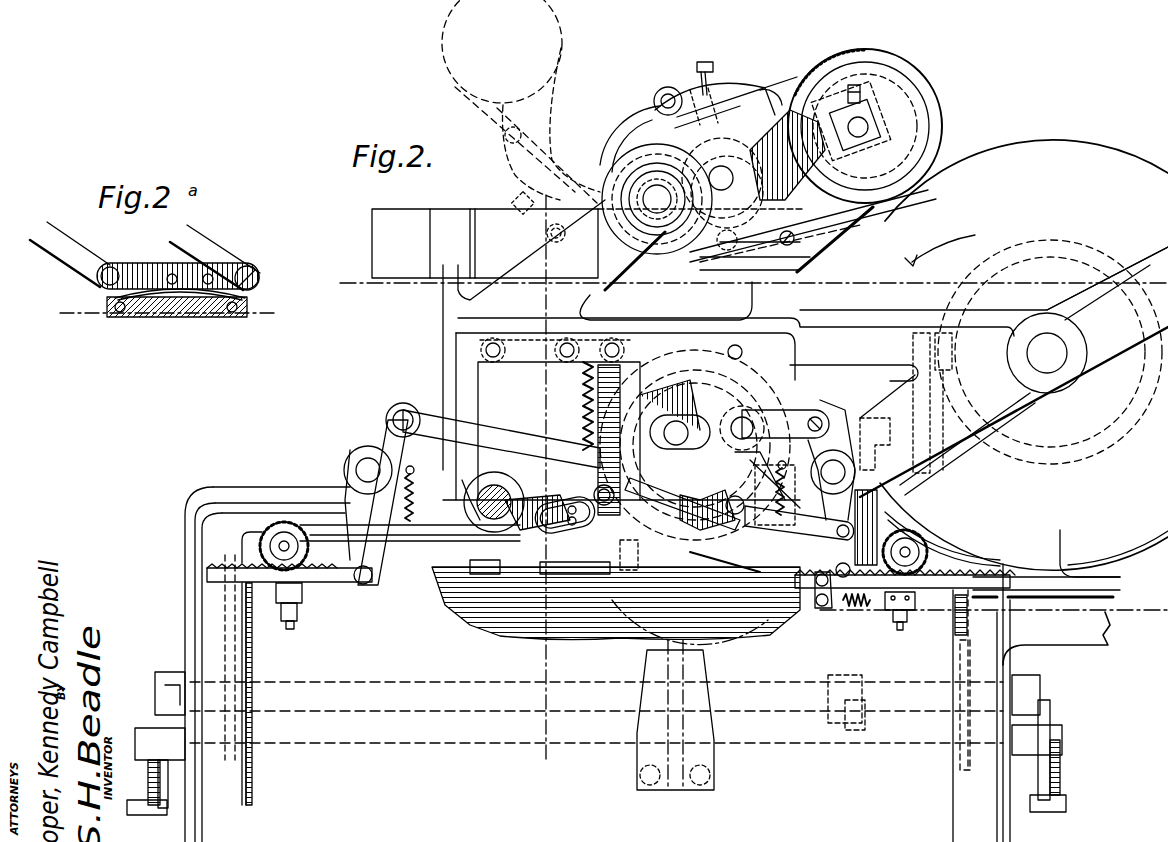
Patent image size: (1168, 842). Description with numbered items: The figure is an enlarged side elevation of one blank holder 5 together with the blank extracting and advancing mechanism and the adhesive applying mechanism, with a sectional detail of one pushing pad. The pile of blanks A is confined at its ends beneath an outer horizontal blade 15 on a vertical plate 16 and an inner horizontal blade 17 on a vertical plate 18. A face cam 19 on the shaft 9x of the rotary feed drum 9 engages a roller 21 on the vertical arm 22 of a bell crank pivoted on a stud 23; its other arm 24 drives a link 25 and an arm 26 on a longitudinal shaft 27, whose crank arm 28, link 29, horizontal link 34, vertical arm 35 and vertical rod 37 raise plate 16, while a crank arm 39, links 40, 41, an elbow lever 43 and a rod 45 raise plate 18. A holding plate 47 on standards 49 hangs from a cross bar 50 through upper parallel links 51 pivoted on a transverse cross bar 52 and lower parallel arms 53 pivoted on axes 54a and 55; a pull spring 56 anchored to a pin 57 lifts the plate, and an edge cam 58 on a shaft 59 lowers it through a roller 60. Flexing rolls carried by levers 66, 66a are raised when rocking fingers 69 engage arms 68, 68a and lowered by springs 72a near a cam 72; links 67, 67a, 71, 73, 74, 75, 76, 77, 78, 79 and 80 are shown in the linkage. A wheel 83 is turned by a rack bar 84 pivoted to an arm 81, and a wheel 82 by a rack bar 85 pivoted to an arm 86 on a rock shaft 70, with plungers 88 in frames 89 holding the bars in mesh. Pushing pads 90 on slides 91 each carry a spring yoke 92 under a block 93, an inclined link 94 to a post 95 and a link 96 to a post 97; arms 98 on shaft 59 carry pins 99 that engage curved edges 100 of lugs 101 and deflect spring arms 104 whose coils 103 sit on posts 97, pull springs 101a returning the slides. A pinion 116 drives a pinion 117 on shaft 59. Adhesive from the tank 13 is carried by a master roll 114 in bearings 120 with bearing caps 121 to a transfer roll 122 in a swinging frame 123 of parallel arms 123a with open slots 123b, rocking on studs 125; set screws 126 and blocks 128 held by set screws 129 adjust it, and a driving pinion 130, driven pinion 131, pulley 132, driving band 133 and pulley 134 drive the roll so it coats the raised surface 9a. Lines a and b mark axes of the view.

In FIG. 2, the blank holder 5 is at (373, 770).
In FIG. 2, the rotary feed drum 9 is at (1082, 157).
In FIG. 2, the raised surface 9a is at (965, 550).
In FIG. 2, the shaft 9x is at (1047, 353).
In FIG. 2, the adhesive tank 13 is at (588, 243).
In FIG. 2, the outer horizontal blade 15 is at (245, 556).
In FIG. 2, the vertical plate 16 is at (236, 600).
In FIG. 2, the inner horizontal blade 17 is at (955, 560).
In FIG. 2, the vertical plate 18 is at (955, 622).
In FIG. 2, the face cam 19 is at (1000, 258).
In FIG. 2, the roller 21 is at (952, 358).
In FIG. 2, the vertical arm 22 is at (910, 375).
In FIG. 2, the stud 23 is at (947, 462).
In FIG. 2, the arm 24 is at (880, 440).
In FIG. 2, the link 25 is at (870, 530).
In FIG. 2, the arm 26 is at (848, 730).
In FIG. 2, the shaft 27 is at (315, 686).
In FIG. 2, the crank arm 28 is at (158, 717).
In FIG. 2, the link 29 is at (160, 775).
In FIG. 2, the horizontal link 34 is at (130, 805).
In FIG. 2, the vertical arm 35 is at (152, 798).
In FIG. 2, the vertical rod 37 is at (240, 668).
In FIG. 2, the crank arm 39 is at (1033, 720).
In FIG. 2, the link 40 is at (1038, 786).
In FIG. 2, the link 41 is at (1062, 802).
In FIG. 2, the elbow lever 43 is at (1052, 778).
In FIG. 2, the rod 45 is at (970, 690).
In FIG. 2, the horizontal plate 47 is at (537, 580).
In FIG. 2, the standards 49 is at (610, 390).
In FIG. 2, the horizontal cross bar 50 is at (618, 352).
In FIG. 2, the upper parallel links 51 is at (512, 332).
In FIG. 2, the transverse cross bar 52 is at (493, 358).
In FIG. 2, the lower parallel arms 53 is at (538, 490).
In FIG. 2, the axis 54a is at (604, 510).
In FIG. 2, the axis 55 is at (494, 485).
In FIG. 2, the pull spring 56 is at (580, 395).
In FIG. 2, the pin 57 is at (557, 347).
In FIG. 2, the edge cam 58 is at (690, 478).
In FIG. 2, the transverse rotary shaft 59 is at (665, 435).
In FIG. 2, the roller 60 is at (708, 478).
In FIG. 2, the lever 66 is at (330, 532).
In FIG. 2, the lever 66a is at (848, 559).
In FIG. 2, the lever 67 is at (380, 560).
In FIG. 2, the pin 67a is at (801, 552).
In FIG. 2, the arm 68 is at (445, 487).
In FIG. 2, the arm 68a is at (765, 495).
In FIG. 2, the rocking fingers 69 is at (783, 462).
In FIG. 2, the rock shaft 70 is at (362, 458).
In FIG. 2, the pivot 71 is at (830, 462).
In FIG. 2, the cam 72 is at (767, 477).
In FIG. 2, the spring 72a is at (609, 494).
In FIG. 2, the pivot 73 is at (746, 417).
In FIG. 2, the link 74 is at (780, 410).
In FIG. 2, the disc 75 is at (662, 418).
In FIG. 2, the lever 76 is at (836, 425).
In FIG. 2, the pivot 77 is at (836, 501).
In FIG. 2, the bar 78 is at (485, 432).
In FIG. 2, the pivot 79 is at (388, 425).
In FIG. 2, the spring 80 is at (848, 608).
In FIG. 2, the arm 81 is at (814, 596).
In FIG. 2, the wheel 82 is at (290, 524).
In FIG. 2, the wheel 83 is at (925, 540).
In FIG. 2, the rack bar 84 is at (937, 582).
In FIG. 2, the rack bar 85 is at (332, 578).
In FIG. 2, the arm 86 is at (372, 578).
In FIG. 2, the vertical plungers 88 is at (280, 595).
In FIG. 2, the frames 89 is at (302, 607).
In FIG. 2A, the pushing pads 90 is at (213, 310).
In FIG. 2, the pushing pads 90 is at (734, 572).
In FIG. 2, the slides 91 is at (580, 570).
In FIG. 2A, the spring yoke 92 is at (180, 292).
In FIG. 2A, the block 93 is at (135, 268).
In FIG. 2, the block 93 is at (710, 570).
In FIG. 2A, the inclined link 94 is at (216, 250).
In FIG. 2, the inclined link 94 is at (722, 512).
In FIG. 2, the post 95 is at (604, 552).
In FIG. 2A, the link 96 is at (82, 250).
In FIG. 2, the link 96 is at (662, 570).
In FIG. 2, the post 97 is at (575, 564).
In FIG. 2, the arms 98 is at (735, 375).
In FIG. 2, the pins 99 is at (742, 352).
In FIG. 2, the curved edges 100 is at (605, 540).
In FIG. 2, the lugs 101 is at (636, 572).
In FIG. 2, the pull springs 101a is at (510, 575).
In FIG. 2, the coils 103 is at (553, 515).
In FIG. 2, the spring arms 104 is at (770, 538).
In FIG. 2, the master roll 114 is at (770, 150).
In FIG. 2, the pinion 116 is at (748, 636).
In FIG. 2, the pinion 117 is at (660, 375).
In FIG. 2, the bearings 120 is at (728, 243).
In FIG. 2, the bearing caps 121 is at (725, 148).
In FIG. 2, the transfer roll 122 is at (935, 135).
In FIG. 2, the swinging frame 123 is at (645, 134).
In FIG. 2, the parallel arms 123a is at (742, 88).
In FIG. 2, the open slots 123b is at (880, 135).
In FIG. 2, the studs 125 is at (657, 200).
In FIG. 2, the set screws 126 is at (711, 72).
In FIG. 2, the blocks 128 is at (873, 120).
In FIG. 2, the set screws 129 is at (857, 99).
In FIG. 2, the driving pinion 130 is at (745, 182).
In FIG. 2, the driven pinion 131 is at (660, 175).
In FIG. 2, the pulley 132 is at (620, 171).
In FIG. 2, the driving band 133 is at (680, 125).
In FIG. 2, the pulley 134 is at (892, 158).
In FIG. 2, the axis line a is at (745, 283).
In FIG. 2, the axis line b is at (549, 488).
In FIG. 2, the blank A is at (585, 625).